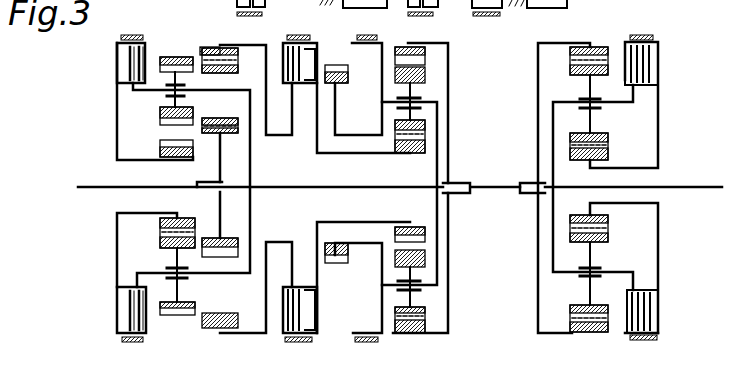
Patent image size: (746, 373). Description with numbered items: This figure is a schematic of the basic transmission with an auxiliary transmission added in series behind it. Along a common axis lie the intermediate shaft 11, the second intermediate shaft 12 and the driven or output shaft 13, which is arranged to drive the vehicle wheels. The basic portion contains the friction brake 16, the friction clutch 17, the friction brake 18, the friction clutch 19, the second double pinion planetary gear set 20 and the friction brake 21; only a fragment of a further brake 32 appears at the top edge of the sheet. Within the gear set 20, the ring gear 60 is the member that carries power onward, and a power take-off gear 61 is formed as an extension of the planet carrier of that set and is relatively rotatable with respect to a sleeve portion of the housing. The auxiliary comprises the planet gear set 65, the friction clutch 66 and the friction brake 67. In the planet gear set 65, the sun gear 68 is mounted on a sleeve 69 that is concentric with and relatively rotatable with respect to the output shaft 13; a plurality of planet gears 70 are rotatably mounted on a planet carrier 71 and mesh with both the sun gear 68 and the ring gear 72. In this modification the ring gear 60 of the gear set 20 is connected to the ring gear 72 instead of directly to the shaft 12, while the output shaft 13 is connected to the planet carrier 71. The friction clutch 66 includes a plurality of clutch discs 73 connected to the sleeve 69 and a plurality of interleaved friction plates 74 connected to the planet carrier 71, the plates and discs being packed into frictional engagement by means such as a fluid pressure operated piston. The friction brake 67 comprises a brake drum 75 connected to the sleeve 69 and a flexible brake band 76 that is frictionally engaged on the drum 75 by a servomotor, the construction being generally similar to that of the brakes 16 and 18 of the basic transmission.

The intermediate shaft 11 is at (82, 194).
The second intermediate shaft 12 is at (352, 189).
The output shaft 13 is at (700, 185).
The friction brake 16 is at (118, 339).
The friction clutch 17 is at (126, 95).
The friction brake 18 is at (283, 343).
The friction clutch 19 is at (285, 90).
The second double pinion planetary gear set 20 is at (433, 88).
The friction brake 21 is at (354, 344).
The brake (adjacent figure) 32 is at (282, 1).
The ring gear 60 is at (425, 60).
The power take-off gear 61 is at (338, 112).
The planet gear set 65 is at (601, 44).
The friction clutch 66 is at (664, 63).
The friction brake 67 is at (655, 32).
The sun gear 68 is at (572, 157).
The sleeve 69 is at (643, 208).
The planet gears 70 is at (606, 141).
The planet carrier 71 is at (552, 125).
The ring gear 72 is at (570, 325).
The clutch discs 73 is at (649, 313).
The friction plates 74 is at (647, 72).
The brake drum 75 is at (654, 342).
The flexible brake band 76 is at (633, 341).